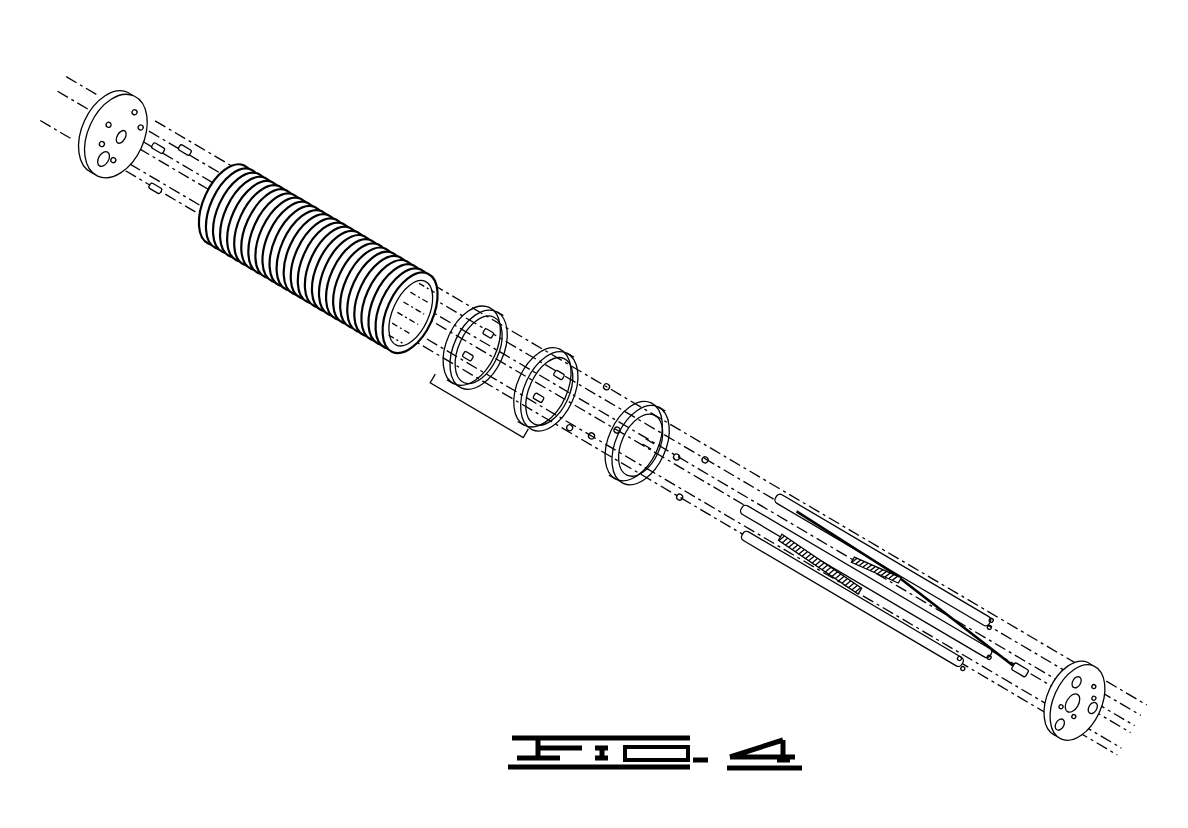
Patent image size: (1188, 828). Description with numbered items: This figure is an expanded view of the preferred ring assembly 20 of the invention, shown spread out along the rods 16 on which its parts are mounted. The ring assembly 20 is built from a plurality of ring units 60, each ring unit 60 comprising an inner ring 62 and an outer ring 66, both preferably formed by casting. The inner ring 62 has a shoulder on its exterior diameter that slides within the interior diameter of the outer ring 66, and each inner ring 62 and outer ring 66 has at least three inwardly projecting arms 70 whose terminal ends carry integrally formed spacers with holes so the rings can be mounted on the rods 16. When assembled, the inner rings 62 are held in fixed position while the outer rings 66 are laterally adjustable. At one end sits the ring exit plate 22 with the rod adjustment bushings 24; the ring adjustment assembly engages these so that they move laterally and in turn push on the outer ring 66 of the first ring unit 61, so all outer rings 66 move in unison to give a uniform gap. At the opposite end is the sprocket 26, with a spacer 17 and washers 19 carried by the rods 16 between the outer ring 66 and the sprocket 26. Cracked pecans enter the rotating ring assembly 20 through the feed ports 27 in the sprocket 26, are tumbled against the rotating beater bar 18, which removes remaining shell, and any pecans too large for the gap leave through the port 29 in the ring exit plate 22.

The rods 16 is at (859, 578).
The spacer 17 is at (668, 405).
The beater bar 18 is at (782, 497).
The washers 19 is at (604, 390).
The ring assembly 20 is at (613, 402).
The ring exit plate 22 is at (139, 93).
The rod adjustment bushings 24 is at (163, 143).
The sprocket 26 is at (1100, 690).
The feed ports 27 is at (1083, 672).
The port 29 is at (105, 163).
The ring unit 60 is at (475, 412).
The first ring unit 61 is at (215, 233).
The inner ring 62 is at (490, 310).
The outer ring 66 is at (560, 353).
The inwardly projecting arms 70 is at (495, 333).